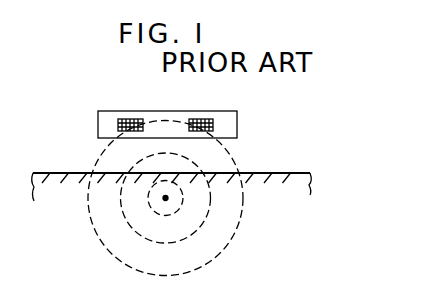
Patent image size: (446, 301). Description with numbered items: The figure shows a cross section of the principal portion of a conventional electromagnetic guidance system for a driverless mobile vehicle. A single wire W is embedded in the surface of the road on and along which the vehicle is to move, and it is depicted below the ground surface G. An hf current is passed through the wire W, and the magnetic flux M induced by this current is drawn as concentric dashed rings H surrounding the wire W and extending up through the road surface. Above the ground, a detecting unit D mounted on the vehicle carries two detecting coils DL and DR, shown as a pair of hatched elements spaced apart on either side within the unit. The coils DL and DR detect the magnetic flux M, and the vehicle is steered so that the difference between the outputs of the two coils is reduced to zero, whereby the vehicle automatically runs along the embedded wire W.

The detecting unit D is at (98, 118).
The detecting coil DL is at (130, 119).
The detecting coil DR is at (201, 119).
The magnetic flux M is at (105, 148).
The magnetic field H is at (184, 148).
The ground surface G is at (288, 173).
The wire W is at (166, 201).